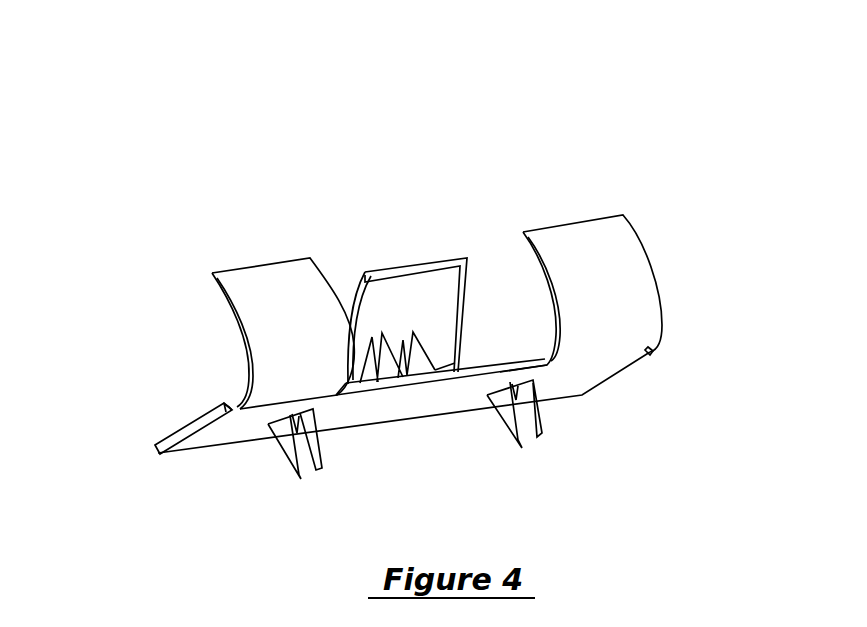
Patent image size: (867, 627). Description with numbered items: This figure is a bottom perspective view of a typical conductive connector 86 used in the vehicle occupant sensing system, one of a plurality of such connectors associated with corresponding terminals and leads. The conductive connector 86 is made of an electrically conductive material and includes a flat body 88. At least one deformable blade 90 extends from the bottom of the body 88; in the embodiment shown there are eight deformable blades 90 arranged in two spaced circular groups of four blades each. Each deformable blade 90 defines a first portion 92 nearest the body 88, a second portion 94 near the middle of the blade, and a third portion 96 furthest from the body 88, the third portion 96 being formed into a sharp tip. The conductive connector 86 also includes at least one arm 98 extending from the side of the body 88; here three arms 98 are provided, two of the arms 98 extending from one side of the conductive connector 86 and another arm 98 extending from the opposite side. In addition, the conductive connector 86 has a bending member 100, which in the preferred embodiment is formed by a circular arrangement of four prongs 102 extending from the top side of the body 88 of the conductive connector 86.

The conductive connector 86 is at (582, 191).
The flat body 88 is at (181, 430).
The deformable blade 90 is at (530, 410).
The first portion 92 is at (303, 418).
The second portion 94 is at (310, 440).
The third portion 96 is at (320, 458).
The arm 98 is at (260, 262).
The bending member 100 is at (417, 346).
The prong 102 is at (417, 360).